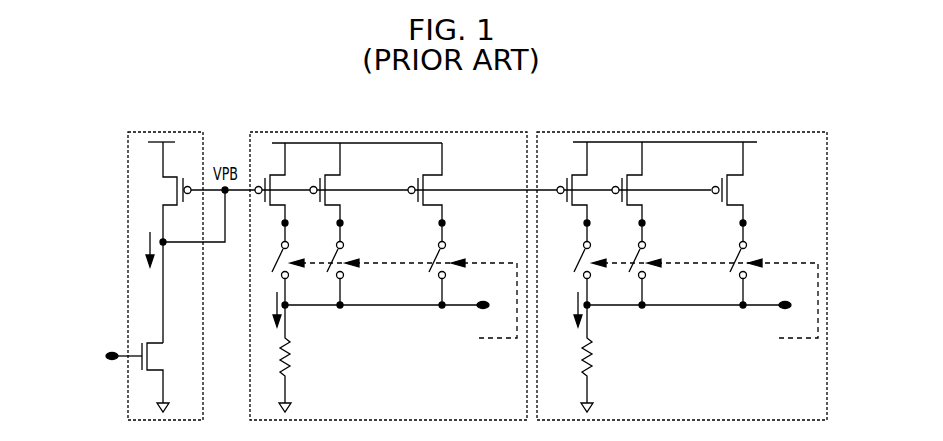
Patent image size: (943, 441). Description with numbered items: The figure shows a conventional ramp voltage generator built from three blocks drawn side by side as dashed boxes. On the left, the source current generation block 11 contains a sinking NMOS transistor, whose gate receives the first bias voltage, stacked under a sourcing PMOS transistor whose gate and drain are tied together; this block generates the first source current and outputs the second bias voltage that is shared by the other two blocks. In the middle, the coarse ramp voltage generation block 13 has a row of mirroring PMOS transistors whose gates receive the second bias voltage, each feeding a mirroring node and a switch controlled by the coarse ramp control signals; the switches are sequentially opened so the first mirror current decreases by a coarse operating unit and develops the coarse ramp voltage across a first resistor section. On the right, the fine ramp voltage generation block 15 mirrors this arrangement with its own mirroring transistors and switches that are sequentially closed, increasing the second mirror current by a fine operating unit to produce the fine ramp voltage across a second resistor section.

The source current generation block 11 is at (183, 130).
The coarse ramp voltage generation block 13 is at (476, 130).
The fine ramp voltage generation block 15 is at (778, 130).